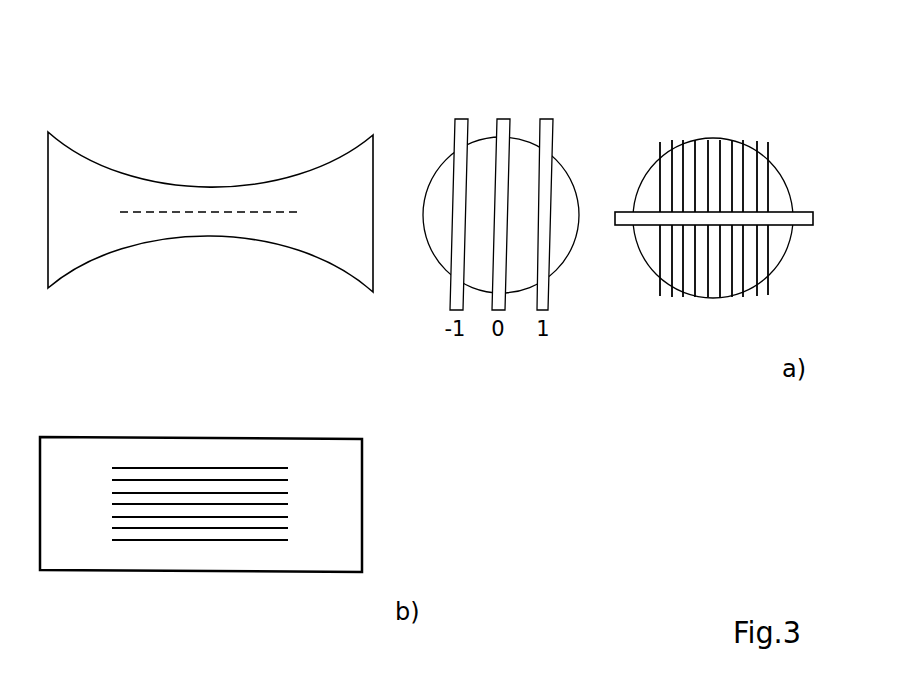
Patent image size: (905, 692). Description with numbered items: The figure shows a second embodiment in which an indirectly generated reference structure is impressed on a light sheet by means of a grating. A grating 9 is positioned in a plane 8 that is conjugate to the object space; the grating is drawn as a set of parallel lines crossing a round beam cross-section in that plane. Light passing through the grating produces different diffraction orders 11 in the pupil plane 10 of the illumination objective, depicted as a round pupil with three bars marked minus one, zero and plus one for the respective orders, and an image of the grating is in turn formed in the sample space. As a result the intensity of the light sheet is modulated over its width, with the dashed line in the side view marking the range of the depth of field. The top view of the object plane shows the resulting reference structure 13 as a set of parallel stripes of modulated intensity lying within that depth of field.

The plane conjugate to the object space 8 is at (650, 195).
The grating 9 is at (773, 172).
The pupil plane of the illumination objective 10 is at (563, 185).
The diffraction orders 11 is at (463, 115).
The reference structure 13 is at (207, 515).